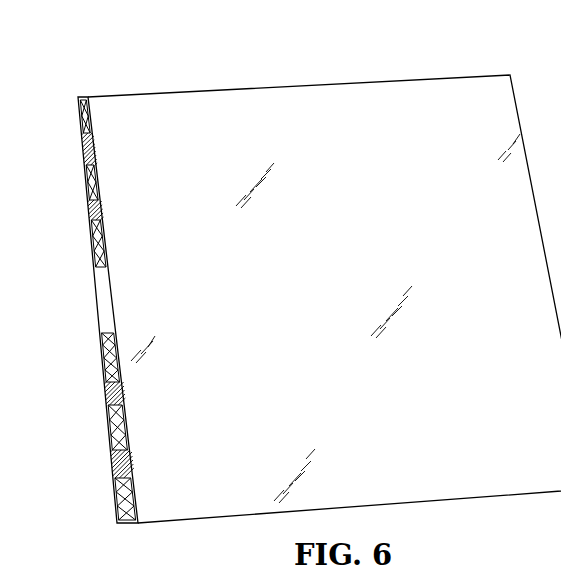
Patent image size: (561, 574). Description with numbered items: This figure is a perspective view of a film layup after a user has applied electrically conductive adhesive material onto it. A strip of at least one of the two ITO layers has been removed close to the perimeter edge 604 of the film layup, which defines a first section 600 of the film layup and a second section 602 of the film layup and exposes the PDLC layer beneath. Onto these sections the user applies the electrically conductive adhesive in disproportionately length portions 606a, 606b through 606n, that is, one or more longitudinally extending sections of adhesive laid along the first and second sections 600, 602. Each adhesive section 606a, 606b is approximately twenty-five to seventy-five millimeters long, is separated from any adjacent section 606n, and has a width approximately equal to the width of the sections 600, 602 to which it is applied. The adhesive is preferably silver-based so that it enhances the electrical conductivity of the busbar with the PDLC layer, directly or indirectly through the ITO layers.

The first section 600 is at (100, 143).
The second section 602 is at (125, 388).
The perimeter edge 604 is at (230, 88).
The electrically conductive adhesive portion 606a is at (81, 109).
The electrically conductive adhesive portion 606b is at (87, 176).
The electrically conductive adhesive portion 606n is at (119, 494).